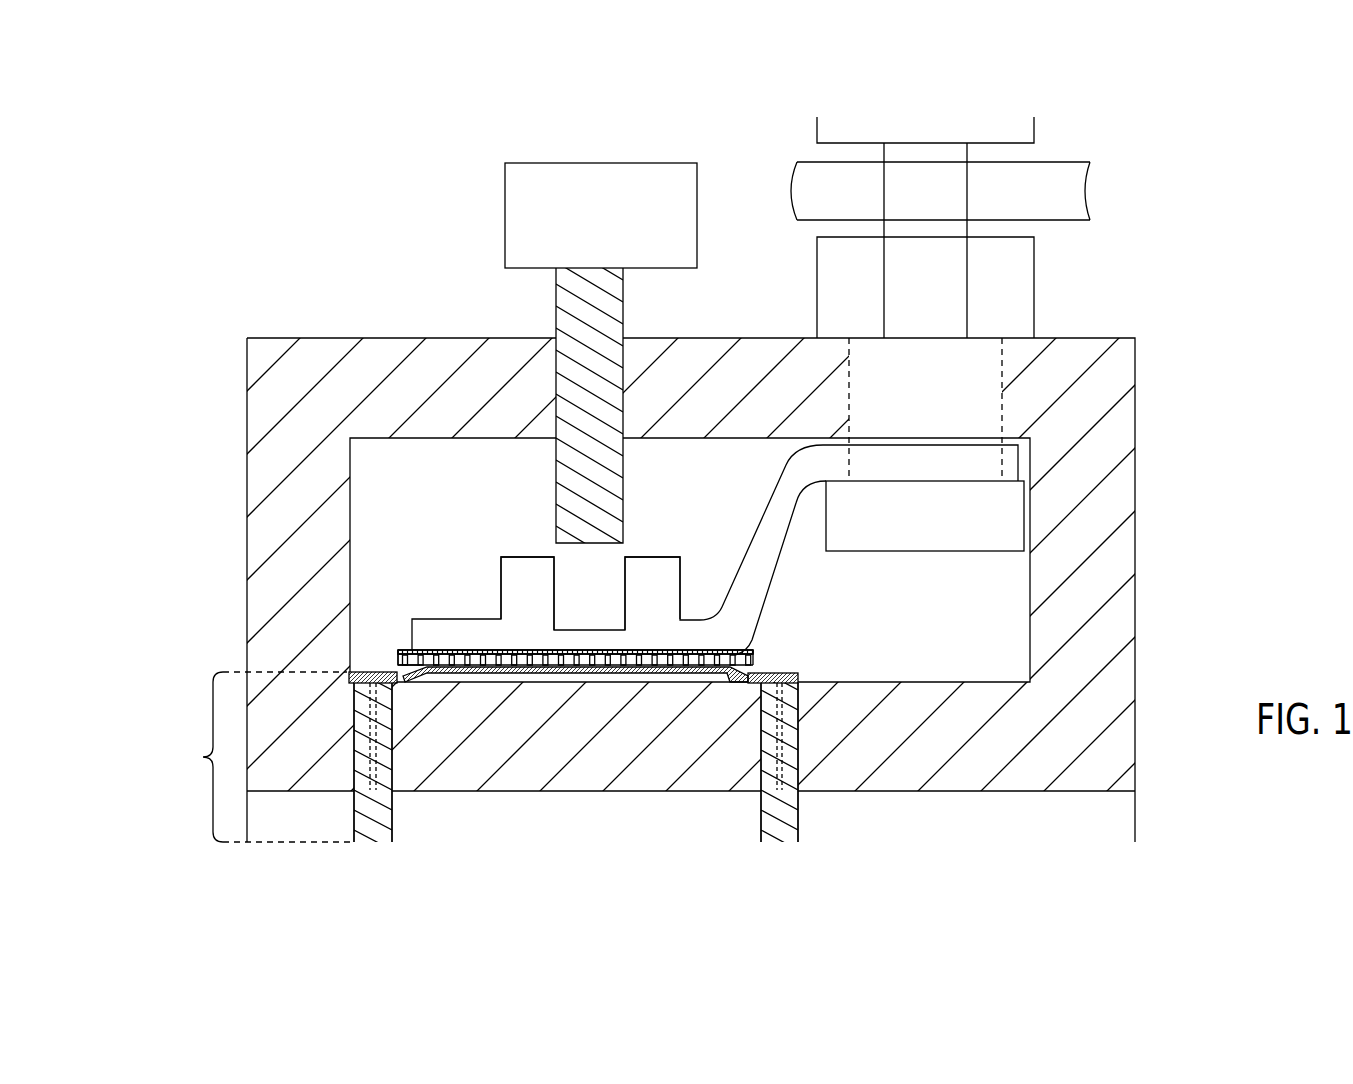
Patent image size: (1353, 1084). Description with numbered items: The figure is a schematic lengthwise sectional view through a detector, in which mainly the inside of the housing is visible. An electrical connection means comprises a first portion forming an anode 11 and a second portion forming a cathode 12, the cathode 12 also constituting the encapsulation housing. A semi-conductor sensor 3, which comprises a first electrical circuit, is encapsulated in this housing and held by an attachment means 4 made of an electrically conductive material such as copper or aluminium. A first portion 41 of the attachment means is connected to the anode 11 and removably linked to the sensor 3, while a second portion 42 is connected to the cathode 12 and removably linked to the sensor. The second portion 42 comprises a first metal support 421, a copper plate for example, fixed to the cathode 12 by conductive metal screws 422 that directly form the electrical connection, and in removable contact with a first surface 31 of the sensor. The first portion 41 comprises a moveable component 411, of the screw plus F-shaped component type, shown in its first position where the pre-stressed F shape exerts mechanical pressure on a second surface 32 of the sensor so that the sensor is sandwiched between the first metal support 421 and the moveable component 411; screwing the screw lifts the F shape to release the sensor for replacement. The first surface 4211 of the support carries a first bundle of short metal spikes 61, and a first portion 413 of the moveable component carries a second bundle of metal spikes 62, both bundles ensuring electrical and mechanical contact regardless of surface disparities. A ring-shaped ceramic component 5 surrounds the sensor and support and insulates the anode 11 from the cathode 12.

The semi-conductor sensor 3 is at (745, 661).
The attachment means 4 is at (542, 563).
The ceramic component 5 is at (1106, 361).
The anode 11 is at (818, 187).
The cathode 12 is at (1086, 803).
The first surface of the sensor 31 is at (733, 655).
The second surface of the sensor 32 is at (402, 648).
The first portion of the attachment means 41 is at (517, 565).
The second portion of the attachment means 42 is at (484, 757).
The first bundle of short metal spikes 61 is at (500, 665).
The second bundle of metal spikes 62 is at (597, 650).
The moveable component 411 is at (652, 563).
The first portion of the moveable component 413 is at (720, 650).
The first metal support 421 is at (577, 675).
The screws 422 is at (778, 758).
The first surface of the first support 4211 is at (780, 686).